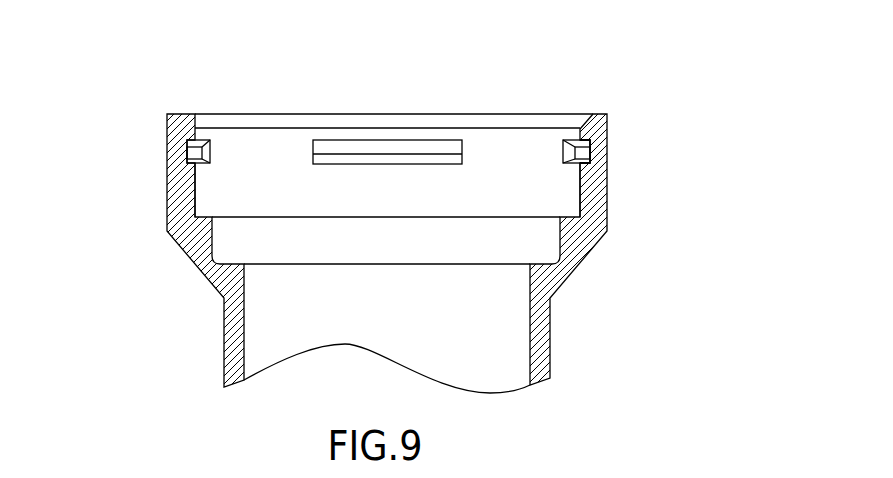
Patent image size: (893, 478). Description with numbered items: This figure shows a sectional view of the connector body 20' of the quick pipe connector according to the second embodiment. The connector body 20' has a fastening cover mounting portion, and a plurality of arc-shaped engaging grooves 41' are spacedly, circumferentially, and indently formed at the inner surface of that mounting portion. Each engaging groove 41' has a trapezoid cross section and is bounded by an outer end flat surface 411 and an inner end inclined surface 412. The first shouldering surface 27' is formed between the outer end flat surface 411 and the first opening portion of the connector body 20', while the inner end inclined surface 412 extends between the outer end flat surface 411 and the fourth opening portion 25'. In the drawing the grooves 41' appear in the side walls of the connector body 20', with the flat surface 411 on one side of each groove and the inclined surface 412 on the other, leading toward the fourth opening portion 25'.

The connector body 20' is at (333, 253).
The fourth opening portion 25' is at (326, 165).
The arc-shaped engaging groove 41' is at (325, 97).
The first shouldering surface 27' is at (625, 96).
The outer end flat surface 411 is at (594, 141).
The inner end inclined surface 412 is at (592, 161).